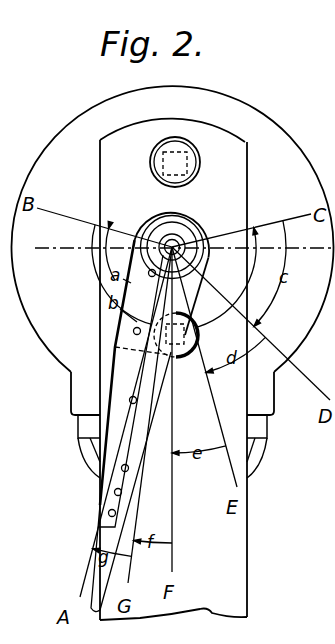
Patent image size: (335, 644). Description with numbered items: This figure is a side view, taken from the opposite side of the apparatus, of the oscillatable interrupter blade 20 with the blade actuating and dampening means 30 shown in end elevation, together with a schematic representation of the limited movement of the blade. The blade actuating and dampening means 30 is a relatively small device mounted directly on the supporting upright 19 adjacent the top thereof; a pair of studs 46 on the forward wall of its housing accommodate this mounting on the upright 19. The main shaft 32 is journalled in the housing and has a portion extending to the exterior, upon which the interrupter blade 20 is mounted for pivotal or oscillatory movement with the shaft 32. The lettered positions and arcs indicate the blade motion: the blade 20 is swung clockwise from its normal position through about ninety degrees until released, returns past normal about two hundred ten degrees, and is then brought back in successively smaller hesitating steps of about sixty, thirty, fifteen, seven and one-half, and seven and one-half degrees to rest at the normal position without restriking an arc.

The blade actuating and dampening means 30 is at (62, 131).
The supporting upright 19 is at (228, 578).
The main shaft 32 is at (180, 236).
The interrupter blade 20 is at (122, 352).
The studs 46 is at (151, 158).